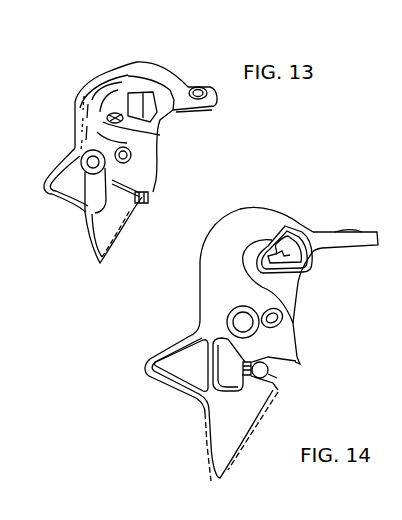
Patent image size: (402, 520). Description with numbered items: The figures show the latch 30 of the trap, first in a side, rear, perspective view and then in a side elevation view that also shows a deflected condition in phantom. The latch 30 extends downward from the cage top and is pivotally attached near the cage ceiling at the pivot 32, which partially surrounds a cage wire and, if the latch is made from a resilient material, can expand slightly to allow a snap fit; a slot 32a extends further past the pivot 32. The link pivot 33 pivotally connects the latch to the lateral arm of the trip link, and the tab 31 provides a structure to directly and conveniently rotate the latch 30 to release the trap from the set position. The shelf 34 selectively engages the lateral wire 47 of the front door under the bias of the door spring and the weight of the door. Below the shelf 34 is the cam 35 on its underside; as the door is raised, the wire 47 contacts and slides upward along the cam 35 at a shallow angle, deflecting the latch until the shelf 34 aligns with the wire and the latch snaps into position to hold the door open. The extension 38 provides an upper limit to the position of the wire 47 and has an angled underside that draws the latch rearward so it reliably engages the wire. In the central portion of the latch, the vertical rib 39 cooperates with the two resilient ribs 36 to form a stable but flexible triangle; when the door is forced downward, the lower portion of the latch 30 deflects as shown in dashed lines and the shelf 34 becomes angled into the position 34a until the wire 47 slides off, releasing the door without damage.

In FIG. 13, the latch 30 is at (176, 72).
In FIG. 13, the tab 31 is at (201, 88).
In FIG. 14, the tab 31 is at (375, 231).
In FIG. 13, the pivot 32 is at (108, 118).
In FIG. 14, the pivot 32 is at (283, 250).
In FIG. 14, the slot 32a is at (297, 250).
In FIG. 14, the link pivot 33 is at (237, 312).
In FIG. 13, the shelf 34 is at (149, 198).
In FIG. 14, the shelf 34 is at (270, 380).
In FIG. 14, the angled shelf position 34a is at (278, 394).
In FIG. 13, the cam 35 is at (134, 220).
In FIG. 13, the resilient ribs 36 is at (56, 192).
In FIG. 14, the resilient ribs 36 is at (160, 387).
In FIG. 14, the extension 38 is at (302, 358).
In FIG. 13, the vertical rib 39 is at (62, 204).
In FIG. 14, the vertical rib 39 is at (203, 367).
In FIG. 14, the wire 47 is at (269, 370).